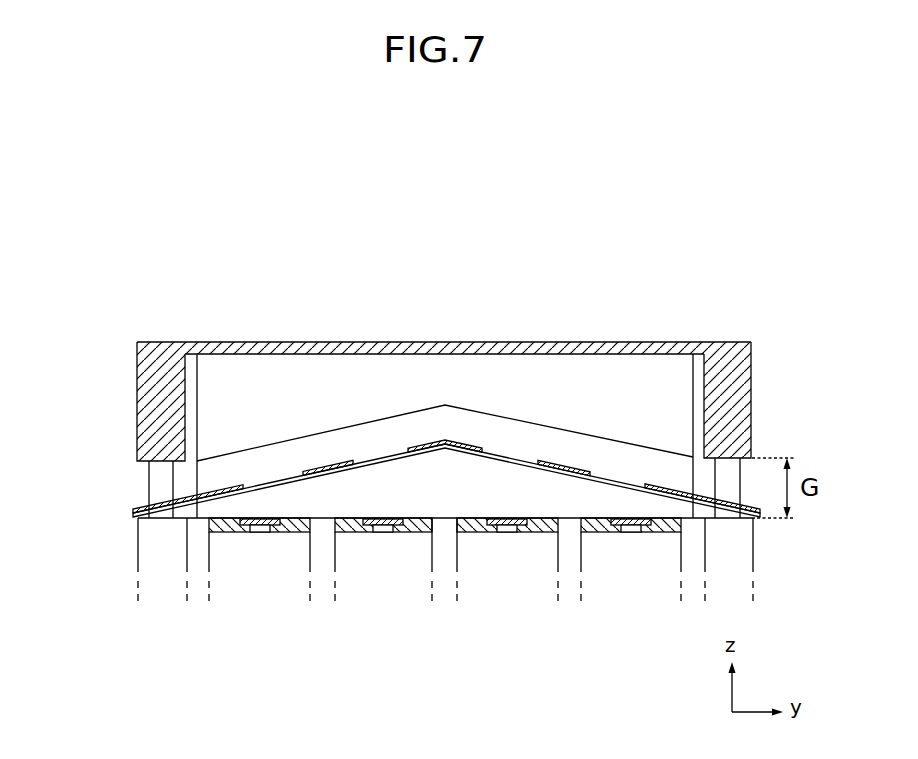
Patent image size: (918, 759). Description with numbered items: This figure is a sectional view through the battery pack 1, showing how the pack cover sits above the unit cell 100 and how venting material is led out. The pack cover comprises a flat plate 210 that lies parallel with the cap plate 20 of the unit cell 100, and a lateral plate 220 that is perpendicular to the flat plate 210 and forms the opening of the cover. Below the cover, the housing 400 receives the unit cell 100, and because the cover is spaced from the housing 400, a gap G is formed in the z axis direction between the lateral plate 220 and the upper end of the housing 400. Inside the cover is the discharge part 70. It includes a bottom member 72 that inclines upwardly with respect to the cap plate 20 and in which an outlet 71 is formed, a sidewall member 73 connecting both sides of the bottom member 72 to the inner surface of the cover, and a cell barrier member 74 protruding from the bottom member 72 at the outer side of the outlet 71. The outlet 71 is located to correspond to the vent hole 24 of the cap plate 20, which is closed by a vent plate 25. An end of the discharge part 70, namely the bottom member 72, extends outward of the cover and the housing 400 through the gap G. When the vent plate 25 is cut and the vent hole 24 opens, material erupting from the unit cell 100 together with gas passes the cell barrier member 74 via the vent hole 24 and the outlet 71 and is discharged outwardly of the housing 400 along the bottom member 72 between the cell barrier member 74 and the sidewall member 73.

The display device 1 is at (472, 271).
The cap plate 20 is at (227, 533).
The vent hole 24 is at (255, 533).
The vent plate 25 is at (270, 533).
The discharge part 70 is at (465, 401).
The outlet 71 is at (277, 480).
The bottom member 72 is at (321, 462).
The sidewall member 73 is at (233, 379).
The cell barrier member 74 is at (381, 418).
The unit cell 100 is at (441, 601).
The flat plate 210 is at (596, 344).
The lateral plate 220 is at (147, 389).
The housing 400 is at (128, 574).